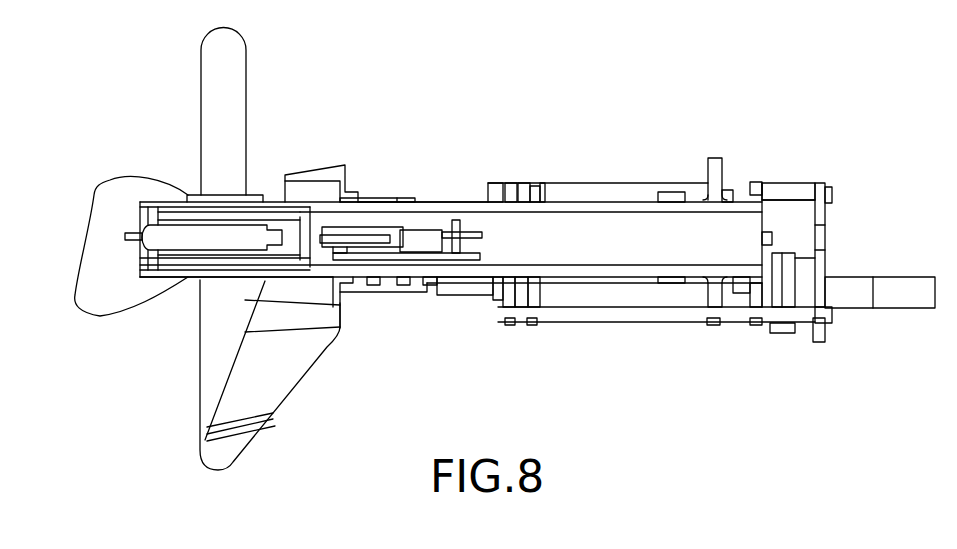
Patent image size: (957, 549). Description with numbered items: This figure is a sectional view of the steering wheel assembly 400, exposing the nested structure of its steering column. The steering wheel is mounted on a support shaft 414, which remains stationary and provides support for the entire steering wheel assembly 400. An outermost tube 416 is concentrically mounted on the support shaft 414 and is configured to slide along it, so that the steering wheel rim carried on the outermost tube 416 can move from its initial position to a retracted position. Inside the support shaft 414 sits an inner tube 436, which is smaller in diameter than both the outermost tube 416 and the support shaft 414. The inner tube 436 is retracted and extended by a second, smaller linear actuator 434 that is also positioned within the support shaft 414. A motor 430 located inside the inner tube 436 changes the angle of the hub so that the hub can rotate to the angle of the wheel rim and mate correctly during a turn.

The steering wheel assembly 400 is at (800, 260).
The support shaft 414 is at (362, 220).
The outermost tube 416 is at (417, 200).
The motor 430 is at (252, 228).
The second linear actuator 434 is at (408, 245).
The inner tube 436 is at (245, 265).